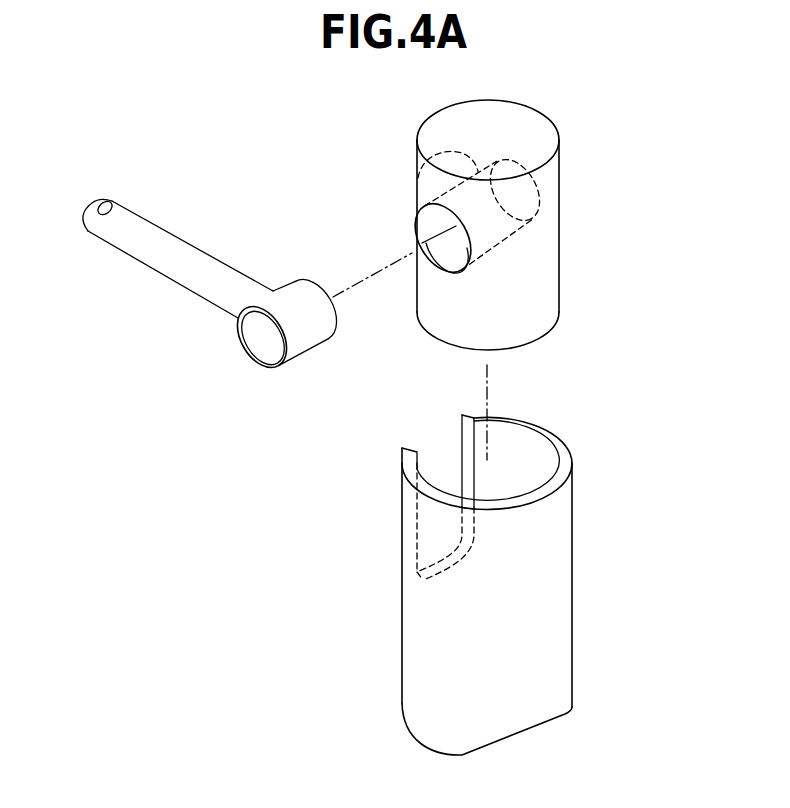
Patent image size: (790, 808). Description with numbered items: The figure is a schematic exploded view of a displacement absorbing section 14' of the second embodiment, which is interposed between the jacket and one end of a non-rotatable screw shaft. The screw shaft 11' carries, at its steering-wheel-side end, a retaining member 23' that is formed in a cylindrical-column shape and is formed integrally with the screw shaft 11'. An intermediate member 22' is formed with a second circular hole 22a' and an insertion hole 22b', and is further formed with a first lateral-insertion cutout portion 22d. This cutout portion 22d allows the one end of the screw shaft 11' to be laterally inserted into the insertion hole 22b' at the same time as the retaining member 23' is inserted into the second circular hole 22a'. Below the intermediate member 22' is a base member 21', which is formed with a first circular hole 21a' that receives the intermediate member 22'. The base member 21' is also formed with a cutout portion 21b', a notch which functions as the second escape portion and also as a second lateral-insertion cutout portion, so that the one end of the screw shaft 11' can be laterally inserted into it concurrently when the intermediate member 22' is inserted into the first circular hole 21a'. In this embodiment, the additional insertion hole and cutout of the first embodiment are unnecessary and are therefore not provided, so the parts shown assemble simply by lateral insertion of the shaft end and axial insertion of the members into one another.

The connecting assembly 14' is at (335, 412).
The screw shaft 11' is at (178, 266).
The retaining member 23' is at (251, 342).
The intermediate member 22' is at (538, 225).
The second circular hole 22a' is at (449, 238).
The insertion hole 22b' is at (392, 141).
The first lateral-insertion cutout portion 22d is at (440, 223).
The base member 21' is at (538, 586).
The first circular hole 21a' is at (535, 495).
The cutout portion 21b' is at (399, 455).